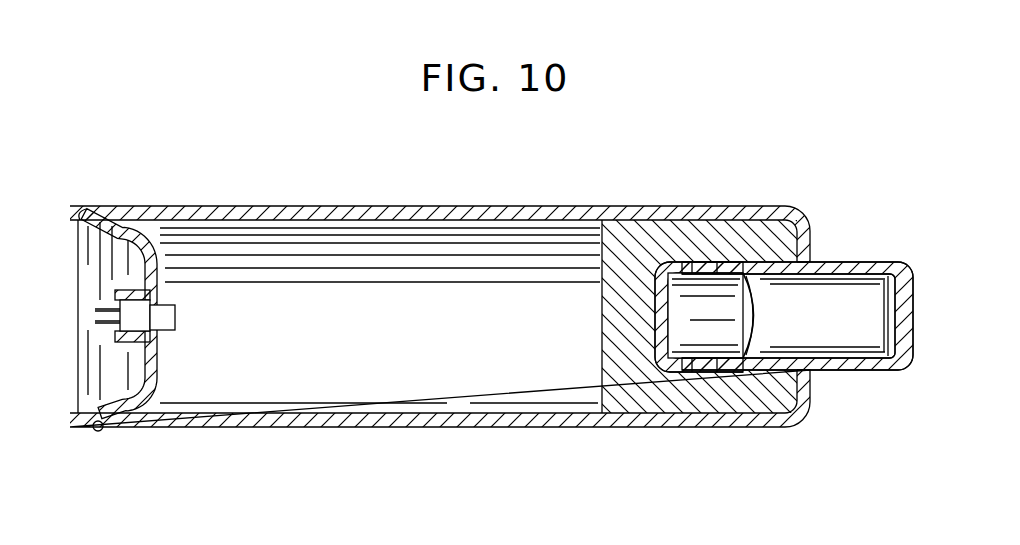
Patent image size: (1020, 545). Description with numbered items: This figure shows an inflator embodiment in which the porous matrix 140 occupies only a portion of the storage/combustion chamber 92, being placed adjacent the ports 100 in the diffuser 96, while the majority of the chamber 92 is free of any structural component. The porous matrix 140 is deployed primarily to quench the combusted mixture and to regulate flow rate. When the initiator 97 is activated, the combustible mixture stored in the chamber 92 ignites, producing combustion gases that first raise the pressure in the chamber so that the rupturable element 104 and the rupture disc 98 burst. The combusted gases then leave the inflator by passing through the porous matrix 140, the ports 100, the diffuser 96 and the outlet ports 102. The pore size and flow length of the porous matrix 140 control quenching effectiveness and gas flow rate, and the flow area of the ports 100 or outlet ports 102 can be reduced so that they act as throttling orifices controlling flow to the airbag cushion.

The storage/combustion chamber 92 is at (578, 319).
The diffuser 96 is at (888, 367).
The initiator 97 is at (160, 313).
The rupture disc 98 is at (761, 314).
The ports 100 is at (707, 367).
The outlet ports 102 is at (842, 363).
The rupturable element 104 is at (737, 258).
The porous matrix 140 is at (644, 373).